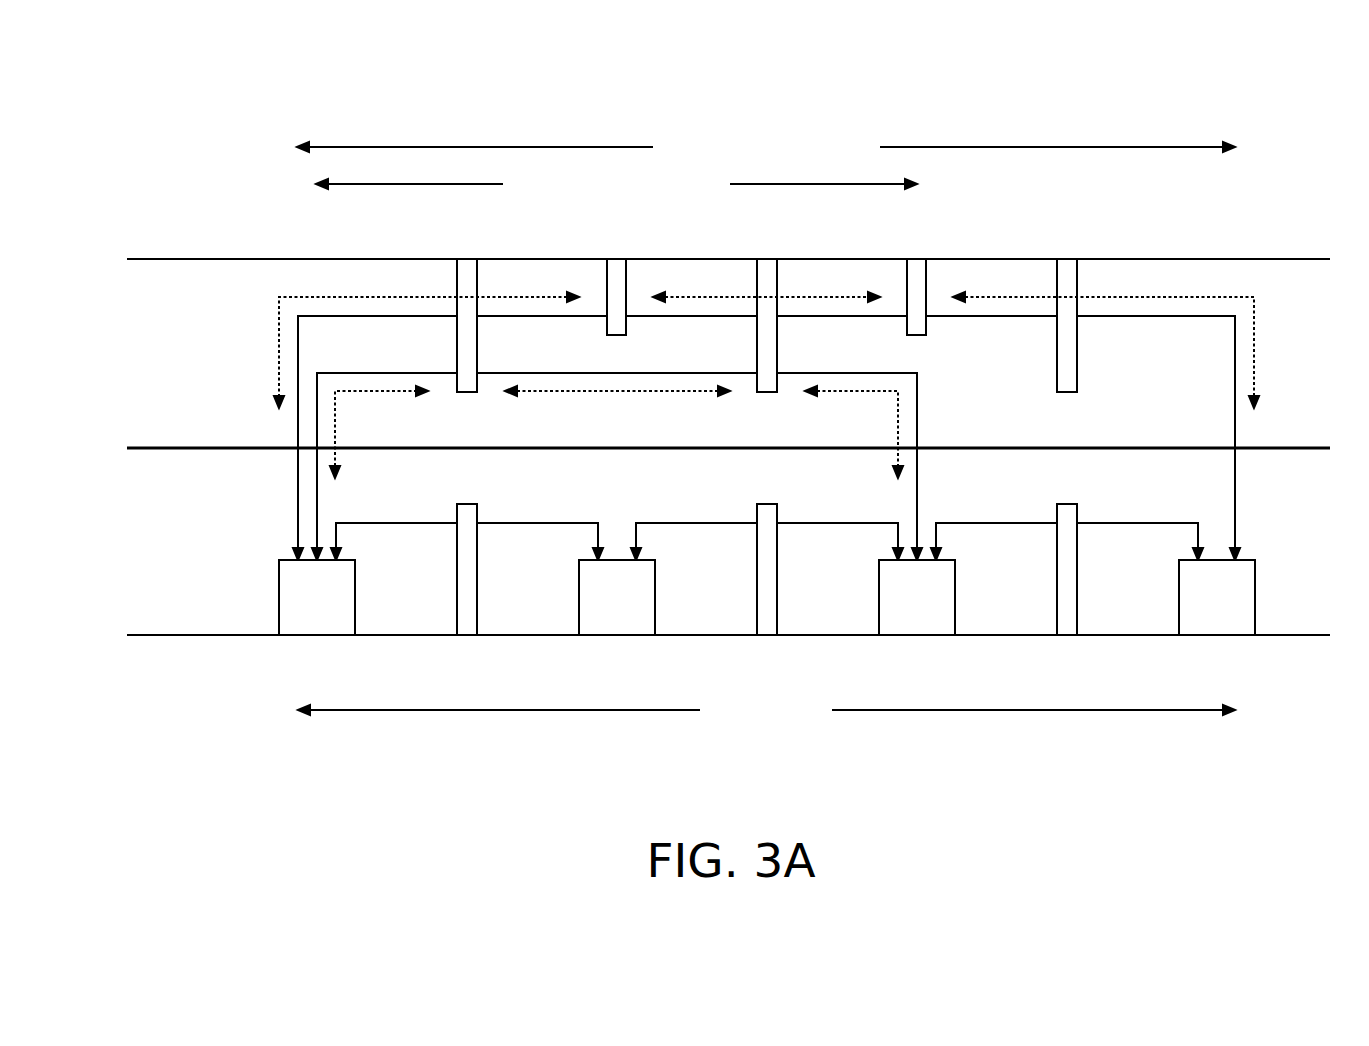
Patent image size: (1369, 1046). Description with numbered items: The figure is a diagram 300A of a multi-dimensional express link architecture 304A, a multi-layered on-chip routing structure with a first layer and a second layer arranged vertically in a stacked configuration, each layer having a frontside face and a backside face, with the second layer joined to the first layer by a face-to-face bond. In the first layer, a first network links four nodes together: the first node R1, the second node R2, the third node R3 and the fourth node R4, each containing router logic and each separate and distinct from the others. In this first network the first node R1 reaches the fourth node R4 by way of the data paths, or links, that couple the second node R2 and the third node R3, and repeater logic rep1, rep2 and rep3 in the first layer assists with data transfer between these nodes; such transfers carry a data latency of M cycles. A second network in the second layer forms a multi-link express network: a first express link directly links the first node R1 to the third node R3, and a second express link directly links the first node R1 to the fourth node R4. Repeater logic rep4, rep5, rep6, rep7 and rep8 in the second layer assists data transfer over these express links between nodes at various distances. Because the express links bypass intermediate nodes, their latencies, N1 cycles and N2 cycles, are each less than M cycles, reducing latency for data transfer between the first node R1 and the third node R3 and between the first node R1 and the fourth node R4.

The diagram 300A is at (228, 62).
The 3D express link architecture 304A is at (890, 92).
The first node R1 is at (317, 597).
The second node R2 is at (617, 597).
The third node R3 is at (917, 597).
The fourth node R4 is at (1217, 597).
The repeater logic rep1 is at (466, 584).
The repeater logic rep2 is at (766, 584).
The repeater logic rep3 is at (1066, 584).
The repeater logic rep4 is at (466, 311).
The repeater logic rep5 is at (766, 311).
The repeater logic rep6 is at (1066, 311).
The repeater logic rep7 is at (616, 282).
The repeater logic rep8 is at (916, 282).